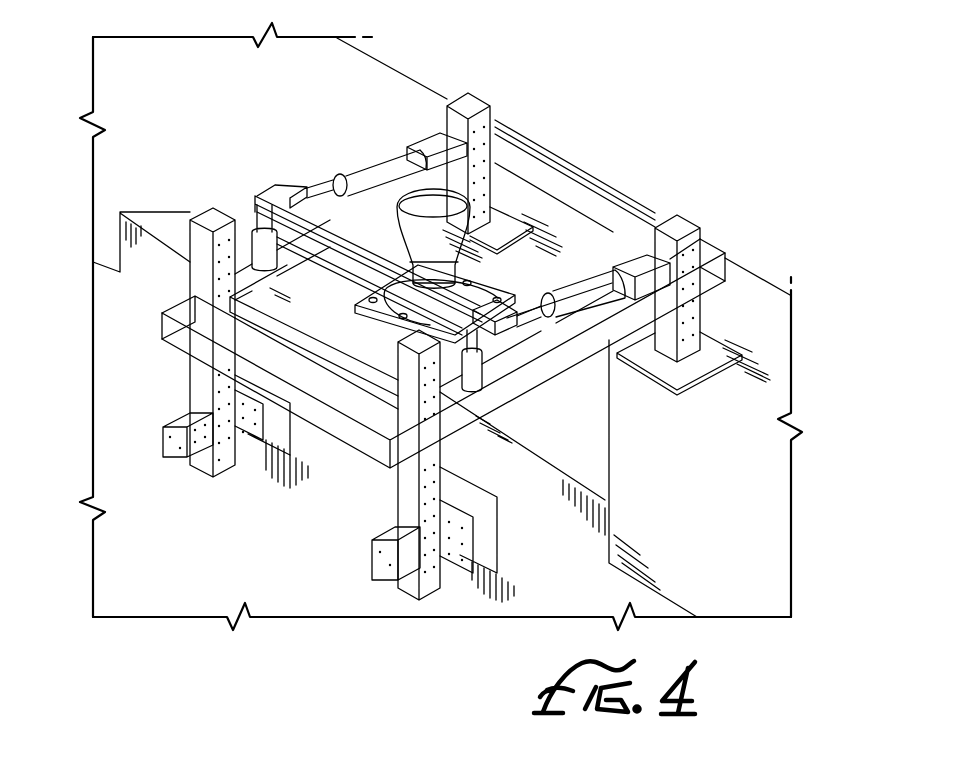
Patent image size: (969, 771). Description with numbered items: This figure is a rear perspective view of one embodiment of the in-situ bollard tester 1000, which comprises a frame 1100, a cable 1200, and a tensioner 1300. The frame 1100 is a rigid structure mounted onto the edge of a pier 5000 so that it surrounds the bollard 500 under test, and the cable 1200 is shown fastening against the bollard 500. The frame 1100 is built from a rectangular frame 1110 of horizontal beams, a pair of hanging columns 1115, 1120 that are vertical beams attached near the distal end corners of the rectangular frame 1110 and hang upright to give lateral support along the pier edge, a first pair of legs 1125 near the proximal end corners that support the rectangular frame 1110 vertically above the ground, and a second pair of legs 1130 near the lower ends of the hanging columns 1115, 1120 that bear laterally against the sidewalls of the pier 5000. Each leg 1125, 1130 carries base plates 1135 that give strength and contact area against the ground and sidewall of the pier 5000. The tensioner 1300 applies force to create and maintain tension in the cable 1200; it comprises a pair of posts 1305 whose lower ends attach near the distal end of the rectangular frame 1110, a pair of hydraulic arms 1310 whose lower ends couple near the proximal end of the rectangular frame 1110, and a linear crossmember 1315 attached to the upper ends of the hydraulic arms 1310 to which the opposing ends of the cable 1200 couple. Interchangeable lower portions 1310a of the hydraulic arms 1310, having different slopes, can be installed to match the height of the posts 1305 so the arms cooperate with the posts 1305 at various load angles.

The in-situ bollard tester 1000 is at (703, 84).
The frame 1100 is at (760, 216).
The rectangular frame 1110 is at (578, 178).
The hanging column 1115 is at (398, 497).
The hanging column 1120 is at (190, 378).
The first pair of legs 1125 is at (475, 105).
The second pair of legs 1130 is at (163, 437).
The base plates 1135 is at (490, 207).
The cable 1200 is at (377, 248).
The tensioner 1300 is at (262, 168).
The posts 1305 is at (240, 250).
The hydraulic arms 1310 is at (328, 170).
The lower portions of the hydraulic arms 1310a is at (432, 145).
The linear crossmember 1315 is at (338, 272).
The bollard 500 is at (416, 195).
The pier 5000 is at (728, 505).